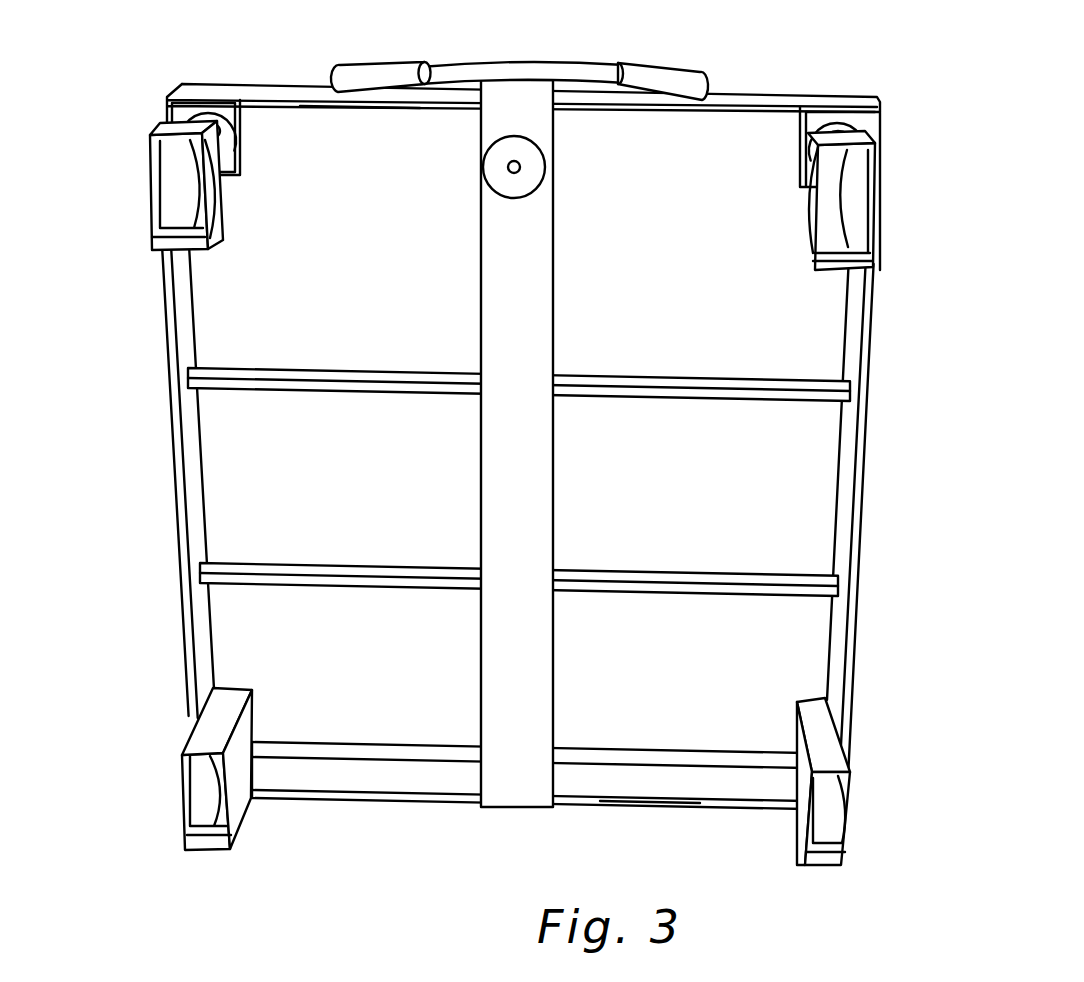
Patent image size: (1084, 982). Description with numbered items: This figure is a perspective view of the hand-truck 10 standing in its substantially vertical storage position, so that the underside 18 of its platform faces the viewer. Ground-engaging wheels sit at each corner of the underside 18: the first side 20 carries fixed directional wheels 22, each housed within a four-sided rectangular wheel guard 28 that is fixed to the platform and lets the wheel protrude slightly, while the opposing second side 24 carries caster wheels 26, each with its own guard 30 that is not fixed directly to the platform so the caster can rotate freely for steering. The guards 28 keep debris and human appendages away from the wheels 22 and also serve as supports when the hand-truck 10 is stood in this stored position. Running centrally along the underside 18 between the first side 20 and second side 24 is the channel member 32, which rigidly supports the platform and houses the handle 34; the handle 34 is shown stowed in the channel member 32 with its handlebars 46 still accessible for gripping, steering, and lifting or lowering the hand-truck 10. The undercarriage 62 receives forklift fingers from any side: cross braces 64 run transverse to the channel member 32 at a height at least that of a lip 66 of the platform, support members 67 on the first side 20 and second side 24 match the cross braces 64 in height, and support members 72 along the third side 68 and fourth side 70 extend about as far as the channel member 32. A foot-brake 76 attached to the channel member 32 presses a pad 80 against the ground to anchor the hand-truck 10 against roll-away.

The hand-truck 10 is at (93, 107).
The underside of the platform 18 is at (698, 260).
The first side 20 is at (467, 803).
The fixed directional wheels 22 is at (207, 788).
The second side 24 is at (761, 98).
The caster wheels 26 is at (173, 185).
The wheel guards 28 is at (197, 743).
The caster wheel guards 30 is at (148, 135).
The channel member 32 is at (528, 318).
The handle 34 is at (520, 58).
The handlebars 46 is at (358, 74).
The undercarriage 62 is at (720, 408).
The cross braces 64 is at (283, 371).
The lip of the platform 66 is at (274, 103).
The support members 67 is at (323, 748).
The third side 68 is at (874, 340).
The fourth side 70 is at (175, 388).
The support members 72 is at (177, 461).
The foot-brake 76 is at (482, 133).
The pad 80 is at (530, 165).